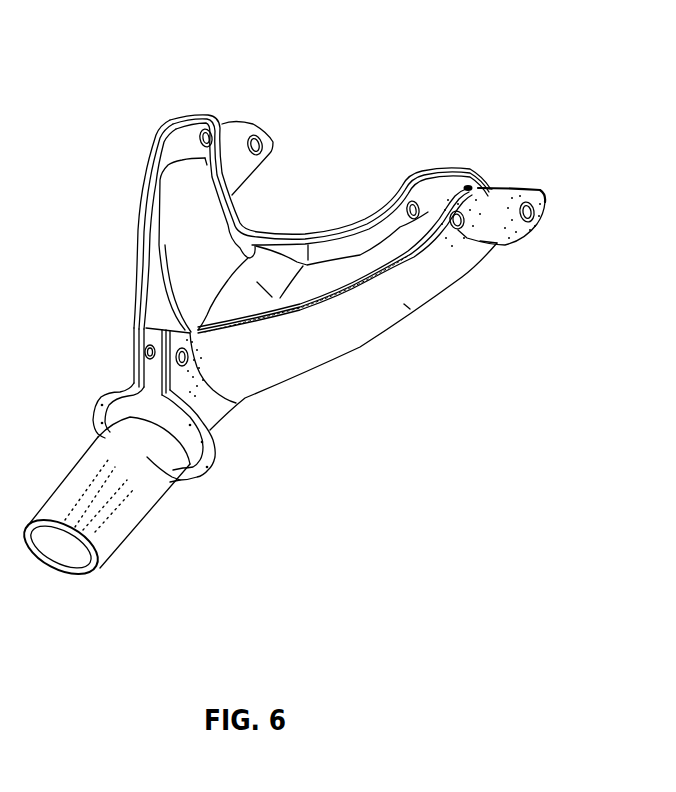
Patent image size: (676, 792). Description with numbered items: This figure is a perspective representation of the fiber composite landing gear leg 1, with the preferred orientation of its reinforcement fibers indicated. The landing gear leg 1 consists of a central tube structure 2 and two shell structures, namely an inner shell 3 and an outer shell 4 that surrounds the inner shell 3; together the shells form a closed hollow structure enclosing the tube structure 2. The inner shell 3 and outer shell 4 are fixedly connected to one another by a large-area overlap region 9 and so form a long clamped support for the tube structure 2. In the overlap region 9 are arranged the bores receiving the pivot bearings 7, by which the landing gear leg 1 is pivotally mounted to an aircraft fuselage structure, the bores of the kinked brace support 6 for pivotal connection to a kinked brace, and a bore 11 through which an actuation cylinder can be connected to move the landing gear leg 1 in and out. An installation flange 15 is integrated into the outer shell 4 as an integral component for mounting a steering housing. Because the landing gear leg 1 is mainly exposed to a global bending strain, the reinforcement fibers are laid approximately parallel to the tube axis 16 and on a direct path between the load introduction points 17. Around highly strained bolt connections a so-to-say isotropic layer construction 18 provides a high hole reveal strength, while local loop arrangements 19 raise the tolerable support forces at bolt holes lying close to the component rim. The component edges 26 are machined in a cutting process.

The landing gear leg 1 is at (333, 293).
The central tube structure 2 is at (147, 458).
The inner shell 3 is at (317, 288).
The outer shell 4 is at (408, 307).
The kinked brace support 6 is at (192, 378).
The pivot bearings 7 is at (253, 123).
The overlap region 9 is at (397, 270).
The bore 11 is at (513, 245).
The installation flange 15 is at (187, 480).
The tube axis 16 is at (292, 312).
The load introduction points 17 is at (203, 267).
The isotropic layer construction 18 is at (532, 184).
The local loop arrangements 19 is at (456, 245).
The component edges 26 is at (407, 182).